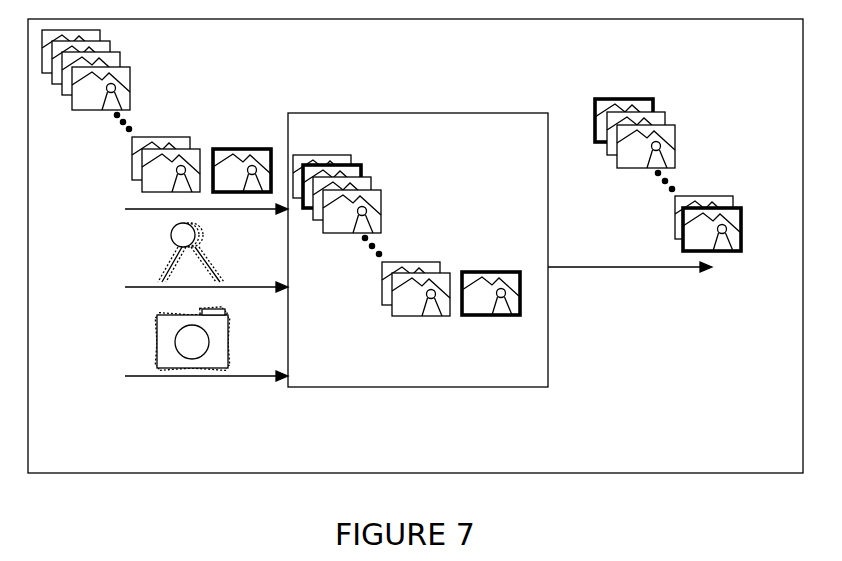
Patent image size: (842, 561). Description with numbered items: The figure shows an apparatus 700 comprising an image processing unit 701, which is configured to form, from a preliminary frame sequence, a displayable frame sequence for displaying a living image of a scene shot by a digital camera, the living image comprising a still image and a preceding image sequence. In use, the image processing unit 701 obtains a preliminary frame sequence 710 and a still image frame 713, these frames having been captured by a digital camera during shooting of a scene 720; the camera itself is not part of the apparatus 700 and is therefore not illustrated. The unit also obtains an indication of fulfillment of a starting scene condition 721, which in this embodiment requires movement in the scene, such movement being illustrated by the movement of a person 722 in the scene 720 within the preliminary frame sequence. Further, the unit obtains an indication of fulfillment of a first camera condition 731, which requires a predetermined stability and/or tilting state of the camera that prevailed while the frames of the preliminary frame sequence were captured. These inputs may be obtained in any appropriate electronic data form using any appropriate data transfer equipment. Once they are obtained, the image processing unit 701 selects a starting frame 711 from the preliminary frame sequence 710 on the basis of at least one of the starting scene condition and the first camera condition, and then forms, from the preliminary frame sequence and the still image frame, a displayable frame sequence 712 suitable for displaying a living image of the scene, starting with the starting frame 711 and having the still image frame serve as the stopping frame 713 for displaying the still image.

The apparatus 700 is at (200, 19).
The image processing unit 701 is at (358, 113).
The preliminary frame sequence 710 is at (131, 86).
The starting frame 711 is at (352, 163).
The displayable frame sequence 712 is at (667, 116).
The still image frame 713 is at (737, 208).
The scene 720 is at (93, 96).
The starting scene condition 721 is at (168, 242).
The person 722 is at (195, 262).
The first camera condition 731 is at (135, 343).